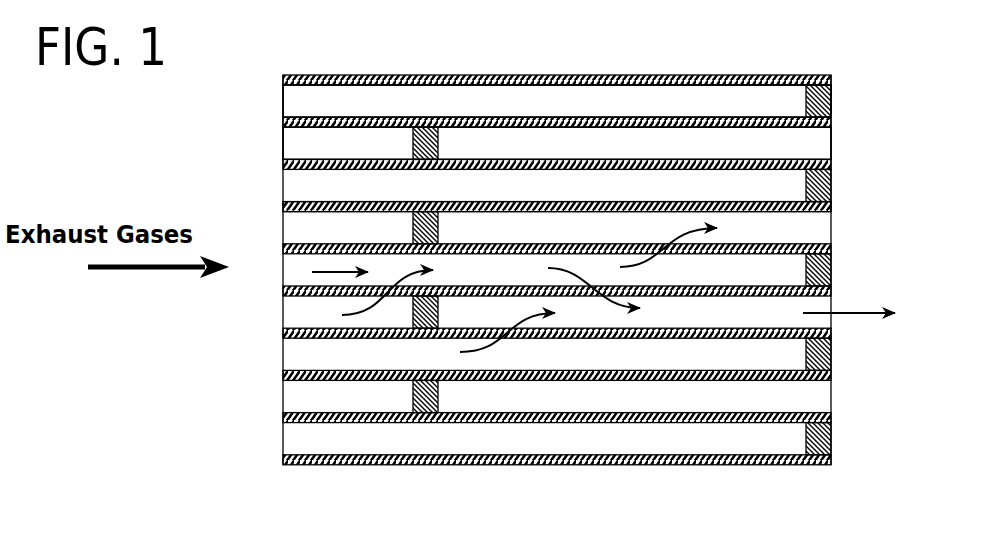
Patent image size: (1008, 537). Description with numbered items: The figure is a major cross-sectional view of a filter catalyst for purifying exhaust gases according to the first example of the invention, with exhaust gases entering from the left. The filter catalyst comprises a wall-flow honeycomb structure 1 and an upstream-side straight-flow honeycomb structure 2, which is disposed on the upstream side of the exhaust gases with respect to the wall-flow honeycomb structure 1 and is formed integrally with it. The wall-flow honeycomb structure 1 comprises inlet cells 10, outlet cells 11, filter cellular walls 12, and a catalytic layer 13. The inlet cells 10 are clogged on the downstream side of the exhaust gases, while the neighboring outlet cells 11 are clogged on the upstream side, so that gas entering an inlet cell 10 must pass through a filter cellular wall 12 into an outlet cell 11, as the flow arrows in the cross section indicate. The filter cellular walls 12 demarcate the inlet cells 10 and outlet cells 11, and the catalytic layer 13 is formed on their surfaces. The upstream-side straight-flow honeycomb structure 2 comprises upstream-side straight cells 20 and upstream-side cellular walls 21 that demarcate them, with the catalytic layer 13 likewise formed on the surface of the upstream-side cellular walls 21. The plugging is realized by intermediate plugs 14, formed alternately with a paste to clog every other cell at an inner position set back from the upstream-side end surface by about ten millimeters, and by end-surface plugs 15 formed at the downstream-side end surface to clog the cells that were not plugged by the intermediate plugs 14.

The wall-flow honeycomb structure 1 is at (559, 265).
The upstream-side straight-flow honeycomb structure 2 is at (418, 65).
The inlet cells 10 is at (607, 93).
The outlet cells 11 is at (683, 148).
The filter cellular walls 12 is at (772, 117).
The catalytic layer 13 is at (548, 53).
The intermediate plugs 14 is at (428, 128).
The end-surface plugs 15 is at (832, 188).
The upstream-side straight cells 20 is at (300, 141).
The upstream-side cellular walls 21 is at (305, 207).